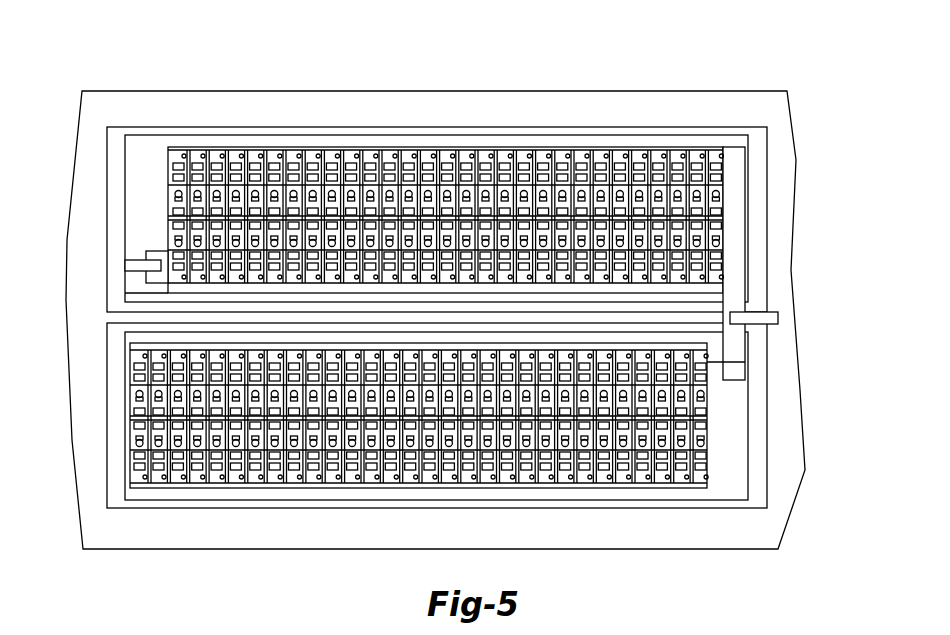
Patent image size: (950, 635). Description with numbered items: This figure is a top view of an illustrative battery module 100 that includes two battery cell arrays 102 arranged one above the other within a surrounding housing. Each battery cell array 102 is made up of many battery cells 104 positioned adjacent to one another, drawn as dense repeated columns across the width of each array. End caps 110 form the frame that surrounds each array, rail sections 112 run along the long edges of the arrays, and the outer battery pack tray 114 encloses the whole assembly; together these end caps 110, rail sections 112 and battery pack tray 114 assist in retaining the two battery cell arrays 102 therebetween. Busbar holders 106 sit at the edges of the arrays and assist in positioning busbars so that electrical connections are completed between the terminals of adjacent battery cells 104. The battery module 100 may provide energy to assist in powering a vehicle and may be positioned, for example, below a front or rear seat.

The battery module 100 is at (428, 308).
The battery cell arrays 102 is at (406, 192).
The battery cells 104 is at (198, 218).
The busbar holders 106 is at (172, 241).
The end caps 110 is at (752, 157).
The rail sections 112 is at (343, 147).
The battery pack tray 114 is at (109, 106).